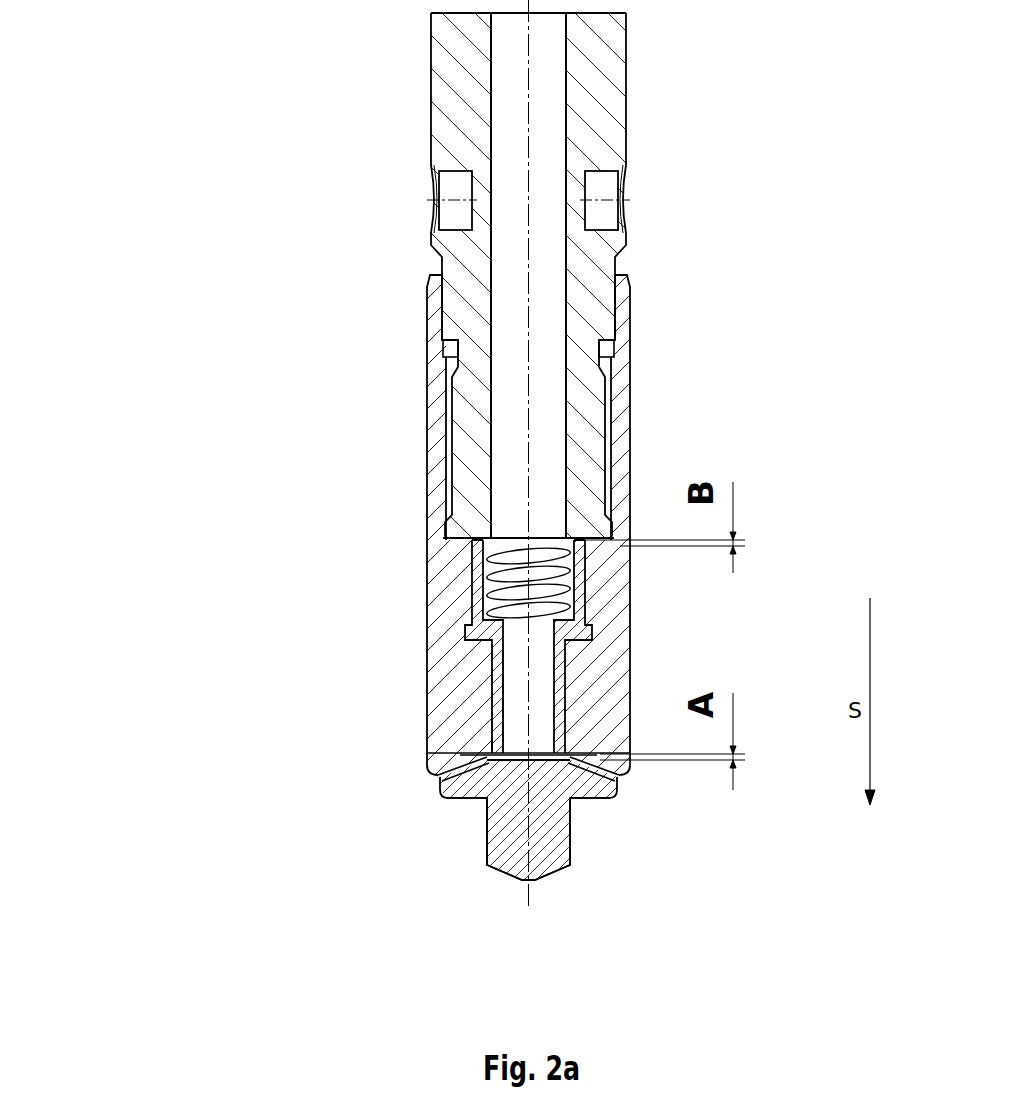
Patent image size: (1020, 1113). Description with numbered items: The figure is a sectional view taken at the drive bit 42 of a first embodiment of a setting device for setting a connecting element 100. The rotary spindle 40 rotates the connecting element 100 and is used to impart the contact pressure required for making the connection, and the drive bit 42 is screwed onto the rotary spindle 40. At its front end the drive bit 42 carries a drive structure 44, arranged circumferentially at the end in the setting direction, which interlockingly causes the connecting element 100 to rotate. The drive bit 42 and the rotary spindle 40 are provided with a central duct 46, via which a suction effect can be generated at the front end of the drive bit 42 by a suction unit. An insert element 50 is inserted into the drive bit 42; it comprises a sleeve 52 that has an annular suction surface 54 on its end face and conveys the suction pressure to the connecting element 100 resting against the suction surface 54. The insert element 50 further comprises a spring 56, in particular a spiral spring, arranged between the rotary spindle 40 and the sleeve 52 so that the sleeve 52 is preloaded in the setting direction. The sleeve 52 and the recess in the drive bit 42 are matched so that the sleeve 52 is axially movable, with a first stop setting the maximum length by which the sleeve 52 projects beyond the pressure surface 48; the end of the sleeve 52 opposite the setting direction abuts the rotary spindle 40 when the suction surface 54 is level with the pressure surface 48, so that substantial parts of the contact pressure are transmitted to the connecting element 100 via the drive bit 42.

The rotary spindle 40 is at (463, 270).
The drive bit 42 is at (612, 625).
The drive structure 44 is at (440, 775).
The central duct 46 is at (533, 457).
The pressure surface 48 is at (443, 787).
The insert element 50 is at (463, 685).
The sleeve 52 is at (490, 658).
The annular suction surface 54 is at (487, 800).
The spring 56 is at (582, 552).
The connecting element 100 is at (547, 817).